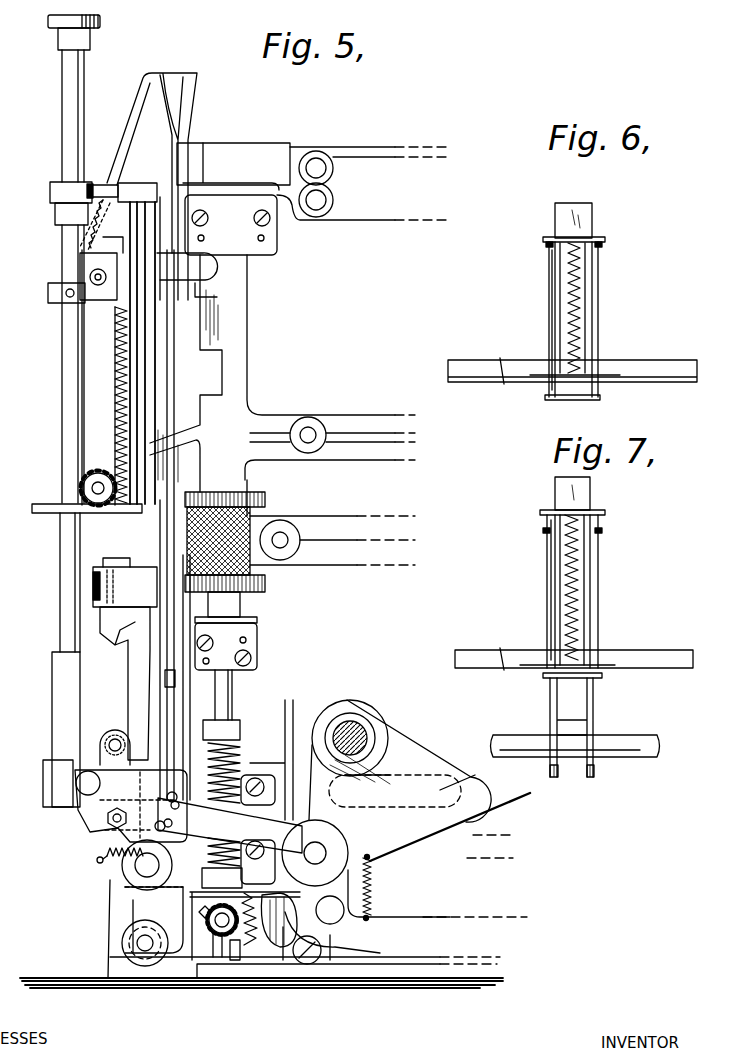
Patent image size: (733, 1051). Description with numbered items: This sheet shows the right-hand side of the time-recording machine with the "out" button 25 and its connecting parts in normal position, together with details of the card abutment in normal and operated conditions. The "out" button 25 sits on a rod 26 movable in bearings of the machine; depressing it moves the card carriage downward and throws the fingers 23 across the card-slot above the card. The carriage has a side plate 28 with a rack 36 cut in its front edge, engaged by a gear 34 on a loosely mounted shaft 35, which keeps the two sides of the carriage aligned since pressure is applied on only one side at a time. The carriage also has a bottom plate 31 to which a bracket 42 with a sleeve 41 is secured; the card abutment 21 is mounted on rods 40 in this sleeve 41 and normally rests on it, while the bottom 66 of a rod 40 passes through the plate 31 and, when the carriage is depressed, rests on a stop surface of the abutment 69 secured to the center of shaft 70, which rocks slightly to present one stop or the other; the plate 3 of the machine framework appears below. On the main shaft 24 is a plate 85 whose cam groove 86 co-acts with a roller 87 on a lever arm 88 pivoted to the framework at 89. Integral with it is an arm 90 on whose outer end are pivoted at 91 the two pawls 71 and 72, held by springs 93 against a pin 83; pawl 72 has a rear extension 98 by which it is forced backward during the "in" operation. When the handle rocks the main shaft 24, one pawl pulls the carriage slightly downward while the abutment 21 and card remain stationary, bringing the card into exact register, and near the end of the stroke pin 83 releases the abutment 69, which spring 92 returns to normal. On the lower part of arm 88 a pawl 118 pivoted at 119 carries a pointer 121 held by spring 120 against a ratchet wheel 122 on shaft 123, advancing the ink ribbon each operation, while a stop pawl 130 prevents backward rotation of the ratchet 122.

In FIG. 5, the out button 25 is at (103, 20).
In FIG. 5, the rod 26 is at (82, 104).
In FIG. 5, the fingers 23 is at (121, 146).
In FIG. 5, the side plate 28 is at (152, 343).
In FIG. 5, the rack 36 is at (117, 346).
In FIG. 5, the gear 34 is at (107, 466).
In FIG. 5, the shaft 35 is at (82, 484).
In FIG. 5, the pawl 71 is at (130, 626).
In FIG. 5, the pawl 72 is at (124, 640).
In FIG. 5, the pin 83 is at (116, 736).
In FIG. 5, the rear extension 98 is at (200, 649).
In FIG. 5, the main shaft 24 is at (356, 736).
In FIG. 5, the plate 85 is at (397, 732).
In FIG. 5, the cam groove 86 is at (403, 779).
In FIG. 5, the roller 87 is at (447, 797).
In FIG. 5, the lever arm 88 is at (424, 824).
In FIG. 5, the pivot 89 is at (320, 856).
In FIG. 5, the arm 90 is at (285, 795).
In FIG. 5, the pivot 91 is at (118, 826).
In FIG. 5, the spring 92 is at (118, 859).
In FIG. 5, the springs 93 is at (173, 819).
In FIG. 5, the pawl 118 is at (320, 916).
In FIG. 5, the pivot 119 is at (337, 910).
In FIG. 5, the spring 120 is at (373, 886).
In FIG. 5, the pointer 121 is at (258, 925).
In FIG. 5, the ratchet wheel 122 is at (244, 935).
In FIG. 5, the shaft 123 is at (217, 935).
In FIG. 5, the stop pawl 130 is at (279, 951).
In FIG. 6, the card abutment 21 is at (596, 236).
In FIG. 7, the card abutment 21 is at (604, 513).
In FIG. 6, the sleeve 41 is at (603, 242).
In FIG. 7, the sleeve 41 is at (604, 531).
In FIG. 6, the rods 40 is at (599, 289).
In FIG. 7, the rods 40 is at (599, 578).
In FIG. 6, the bracket 42 is at (581, 322).
In FIG. 7, the bracket 42 is at (580, 607).
In FIG. 6, the bottom plate 31 is at (572, 388).
In FIG. 6, the bottom of rod 66 is at (598, 401).
In FIG. 7, the plate 3 is at (490, 650).
In FIG. 7, the abutment 69 is at (595, 714).
In FIG. 7, the shaft 70 is at (632, 756).